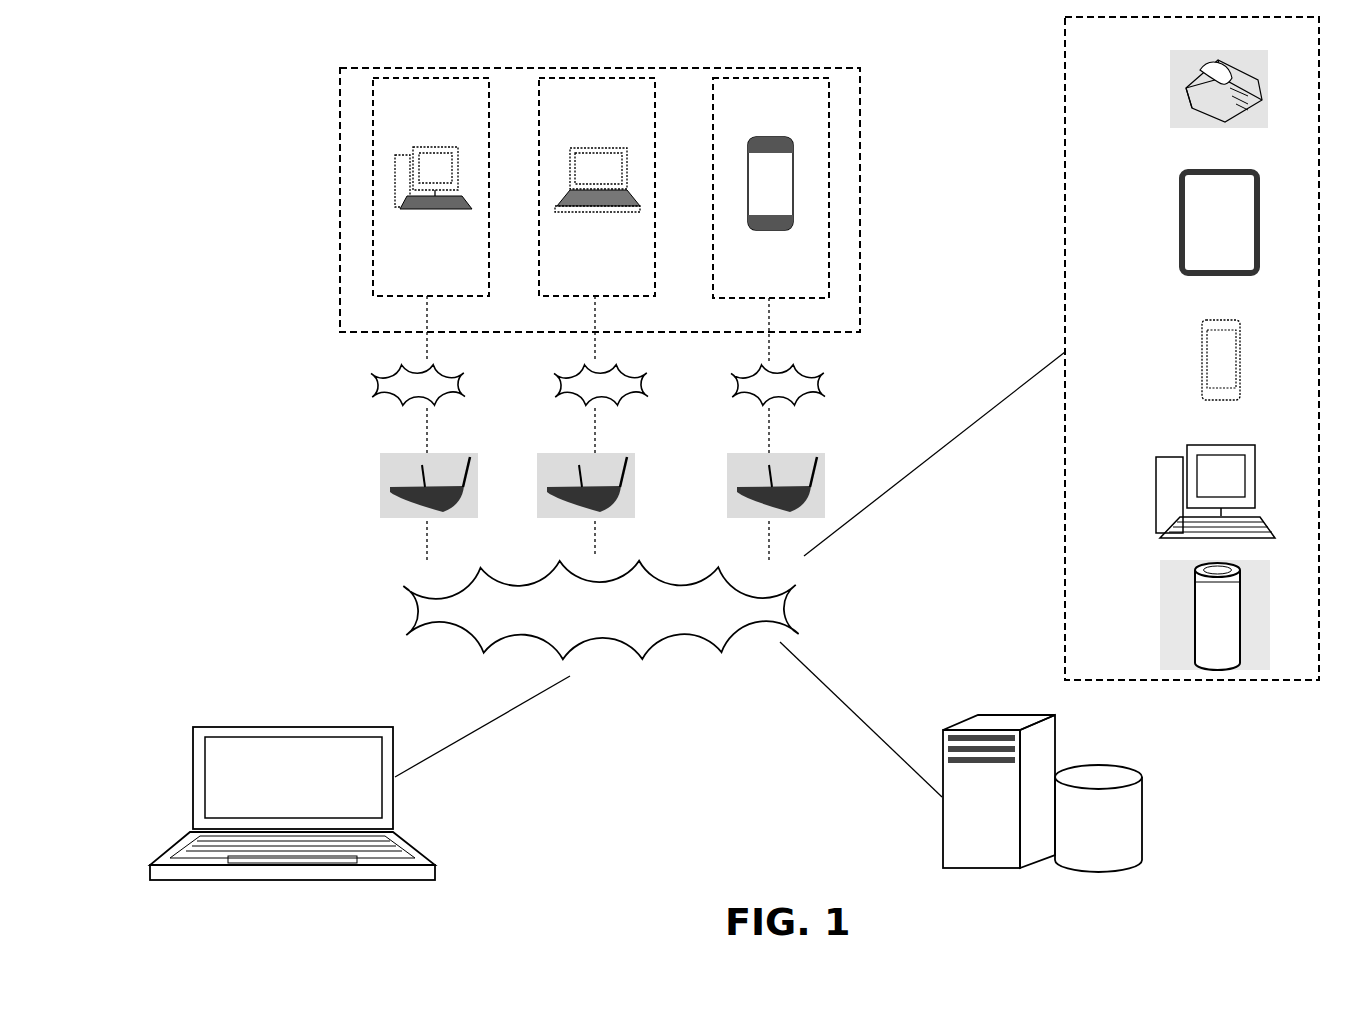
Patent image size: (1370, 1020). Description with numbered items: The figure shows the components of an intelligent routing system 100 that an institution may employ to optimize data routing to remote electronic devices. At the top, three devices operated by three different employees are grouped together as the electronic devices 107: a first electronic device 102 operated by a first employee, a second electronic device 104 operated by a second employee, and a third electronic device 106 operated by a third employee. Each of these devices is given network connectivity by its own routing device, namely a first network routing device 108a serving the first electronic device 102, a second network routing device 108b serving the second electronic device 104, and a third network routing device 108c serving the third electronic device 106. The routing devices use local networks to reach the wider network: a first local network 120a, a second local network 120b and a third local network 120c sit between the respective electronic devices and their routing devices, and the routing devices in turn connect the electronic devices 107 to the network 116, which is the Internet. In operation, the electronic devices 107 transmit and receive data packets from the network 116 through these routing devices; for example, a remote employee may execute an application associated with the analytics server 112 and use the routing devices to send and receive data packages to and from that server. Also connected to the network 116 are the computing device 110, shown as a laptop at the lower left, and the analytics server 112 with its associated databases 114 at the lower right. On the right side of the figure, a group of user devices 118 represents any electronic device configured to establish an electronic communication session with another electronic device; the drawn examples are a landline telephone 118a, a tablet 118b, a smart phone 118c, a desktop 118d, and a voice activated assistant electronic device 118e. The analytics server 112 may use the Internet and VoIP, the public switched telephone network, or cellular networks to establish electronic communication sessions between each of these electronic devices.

The intelligent routing system 100 is at (282, 114).
The first electronic device 102 is at (470, 324).
The second electronic device 104 is at (650, 324).
The third electronic device 106 is at (828, 324).
The electronic devices 107 is at (905, 116).
The first network routing device 108a is at (528, 484).
The second network routing device 108b is at (684, 484).
The third network routing device 108c is at (889, 484).
The computing device 110 is at (418, 921).
The analytics server 112 is at (861, 876).
The databases 114 is at (1087, 929).
The network 116 is at (566, 633).
The user devices 118 is at (1369, 84).
The landline telephone 118a is at (1160, 91).
The tablet 118b is at (1163, 247).
The smart phone 118c is at (1165, 367).
The desktop 118d is at (1143, 517).
The voice activated assistant electronic device 118e is at (1154, 634).
The first local network 120a is at (440, 396).
The second local network 120b is at (622, 396).
The third local network 120c is at (798, 396).